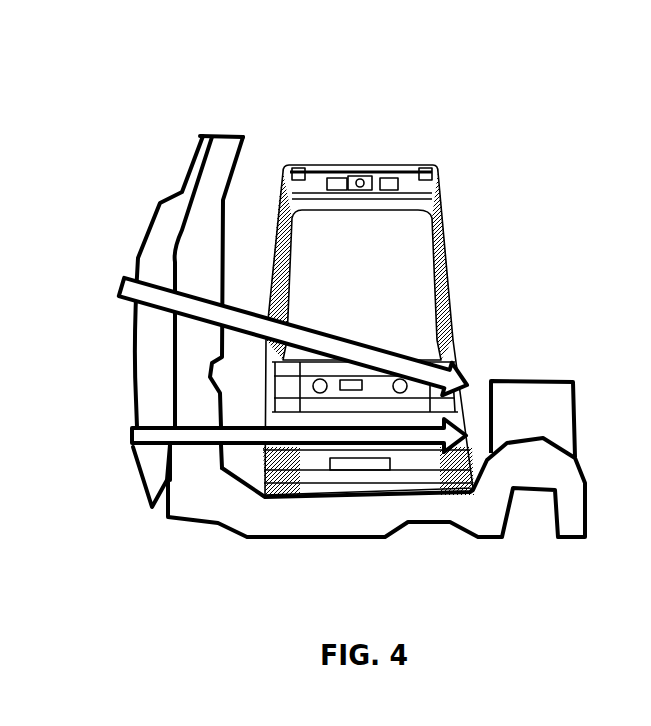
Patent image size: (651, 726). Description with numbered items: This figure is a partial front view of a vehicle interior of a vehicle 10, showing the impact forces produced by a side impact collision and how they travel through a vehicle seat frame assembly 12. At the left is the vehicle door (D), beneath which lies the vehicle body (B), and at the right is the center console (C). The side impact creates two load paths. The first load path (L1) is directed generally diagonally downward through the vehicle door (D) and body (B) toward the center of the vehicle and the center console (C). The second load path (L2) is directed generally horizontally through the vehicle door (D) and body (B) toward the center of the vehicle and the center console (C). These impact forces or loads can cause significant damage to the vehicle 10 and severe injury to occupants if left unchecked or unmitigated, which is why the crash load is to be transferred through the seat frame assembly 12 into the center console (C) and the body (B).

The vehicle 10 is at (204, 128).
The vehicle seat frame assembly 12 is at (338, 106).
The vehicle door D is at (160, 205).
The first load path L1 is at (123, 277).
The second load path L2 is at (130, 426).
The body B is at (192, 503).
The center console C is at (513, 392).